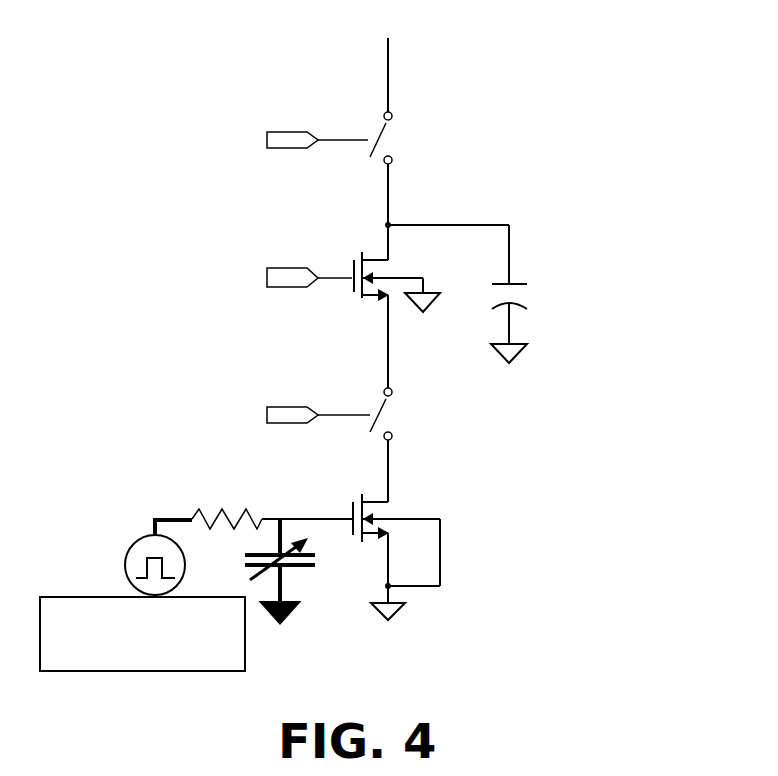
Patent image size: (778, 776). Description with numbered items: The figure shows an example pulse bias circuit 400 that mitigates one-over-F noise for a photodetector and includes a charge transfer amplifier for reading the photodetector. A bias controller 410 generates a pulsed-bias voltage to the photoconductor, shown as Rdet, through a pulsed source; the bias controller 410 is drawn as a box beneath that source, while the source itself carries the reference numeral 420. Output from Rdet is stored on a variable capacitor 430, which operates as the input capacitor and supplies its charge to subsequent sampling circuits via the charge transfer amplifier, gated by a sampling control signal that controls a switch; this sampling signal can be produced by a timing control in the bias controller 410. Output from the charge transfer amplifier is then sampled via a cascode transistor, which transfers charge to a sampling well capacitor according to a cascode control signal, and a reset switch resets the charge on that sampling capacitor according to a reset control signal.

The pulse bias circuit 400 is at (541, 90).
The bias controller 410 is at (245, 650).
The pulse source 420 is at (134, 544).
The variable capacitor 430 is at (300, 567).